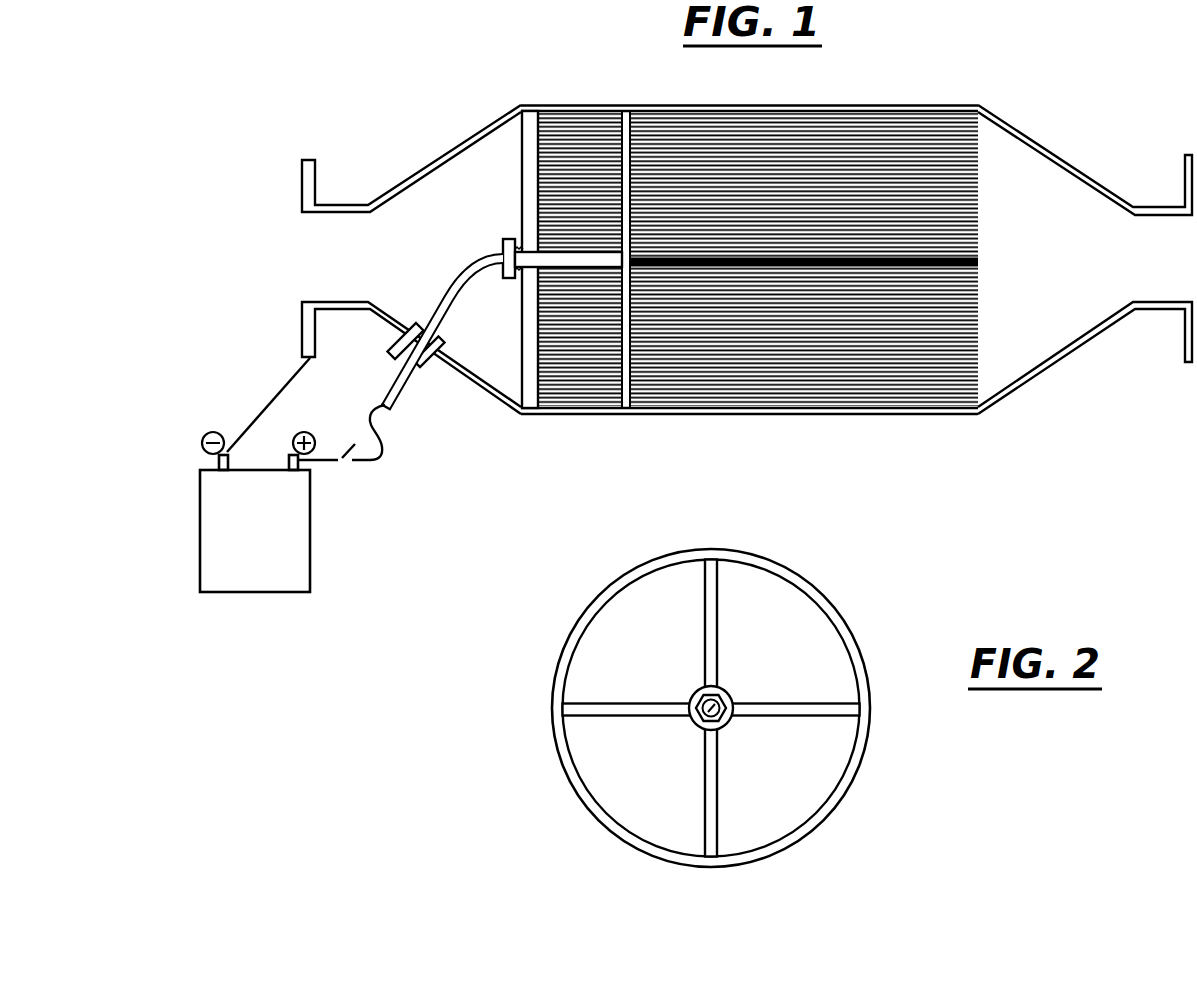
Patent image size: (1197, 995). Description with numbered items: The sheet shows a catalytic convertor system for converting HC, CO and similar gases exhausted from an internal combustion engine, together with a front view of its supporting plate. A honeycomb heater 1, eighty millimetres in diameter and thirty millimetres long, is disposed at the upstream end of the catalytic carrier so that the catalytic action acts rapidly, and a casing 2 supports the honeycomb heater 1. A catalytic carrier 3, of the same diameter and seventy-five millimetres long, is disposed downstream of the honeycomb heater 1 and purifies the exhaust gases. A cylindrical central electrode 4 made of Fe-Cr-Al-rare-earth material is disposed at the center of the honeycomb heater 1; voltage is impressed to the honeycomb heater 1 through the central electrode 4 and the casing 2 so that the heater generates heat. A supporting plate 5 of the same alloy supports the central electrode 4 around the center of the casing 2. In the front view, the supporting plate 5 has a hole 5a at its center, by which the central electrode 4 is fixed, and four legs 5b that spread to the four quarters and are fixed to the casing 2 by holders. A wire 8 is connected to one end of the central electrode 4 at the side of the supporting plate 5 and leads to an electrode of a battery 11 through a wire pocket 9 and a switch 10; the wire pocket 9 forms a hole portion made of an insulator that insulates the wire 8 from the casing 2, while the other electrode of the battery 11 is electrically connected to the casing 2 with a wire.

In FIG. 1, the honeycomb heater 1 is at (570, 385).
In FIG. 1, the casing 2 is at (779, 104).
In FIG. 1, the catalytic carrier 3 is at (723, 385).
In FIG. 1, the central electrode 4 is at (598, 262).
In FIG. 1, the supporting plate 5 is at (521, 152).
In FIG. 2, the supporting plate 5 is at (705, 586).
In FIG. 2, the hole 5a is at (727, 688).
In FIG. 2, the legs 5b is at (838, 718).
In FIG. 1, the wire 8 is at (452, 300).
In FIG. 1, the wire pocket 9 is at (414, 370).
In FIG. 1, the switch 10 is at (348, 462).
In FIG. 1, the battery 11 is at (303, 545).